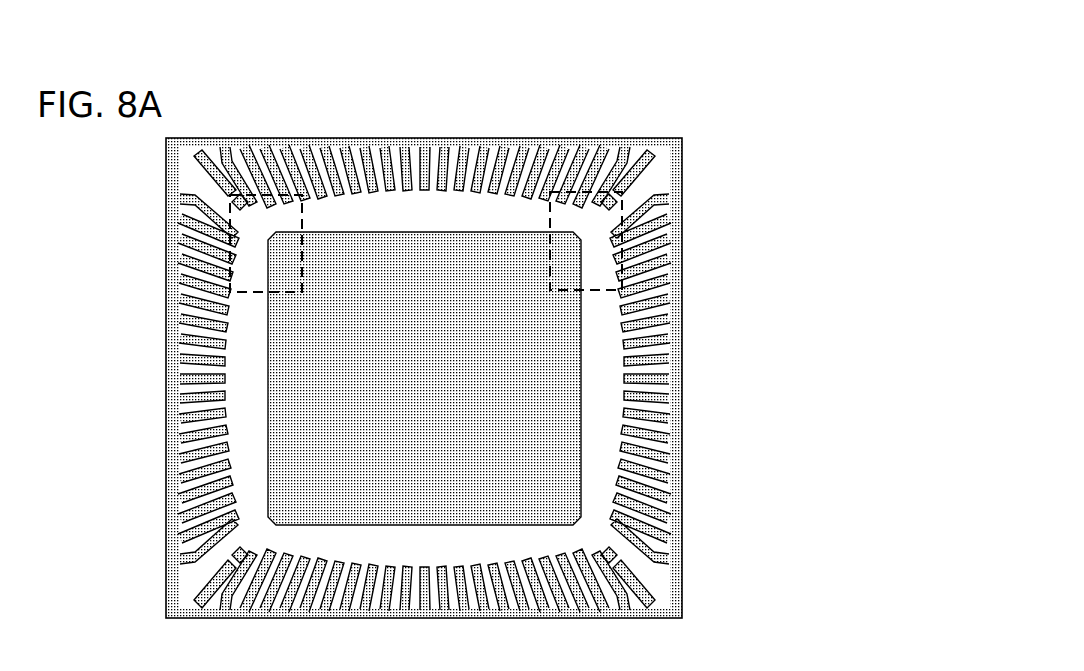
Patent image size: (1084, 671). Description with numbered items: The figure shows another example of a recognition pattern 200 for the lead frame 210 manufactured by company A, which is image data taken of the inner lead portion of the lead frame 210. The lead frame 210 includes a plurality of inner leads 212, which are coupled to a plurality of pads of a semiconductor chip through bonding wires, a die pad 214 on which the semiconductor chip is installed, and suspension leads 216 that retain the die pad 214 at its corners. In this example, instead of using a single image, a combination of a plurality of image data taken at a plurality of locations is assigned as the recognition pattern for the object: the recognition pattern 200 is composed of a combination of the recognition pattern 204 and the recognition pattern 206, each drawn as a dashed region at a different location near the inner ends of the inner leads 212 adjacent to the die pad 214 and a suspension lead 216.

The recognition pattern 200 is at (510, 63).
The recognition pattern 204 is at (262, 192).
The recognition pattern 206 is at (580, 190).
The lead frame 210 is at (499, 378).
The inner leads 212 is at (650, 367).
The die pad 214 is at (565, 447).
The suspension leads 216 is at (630, 187).